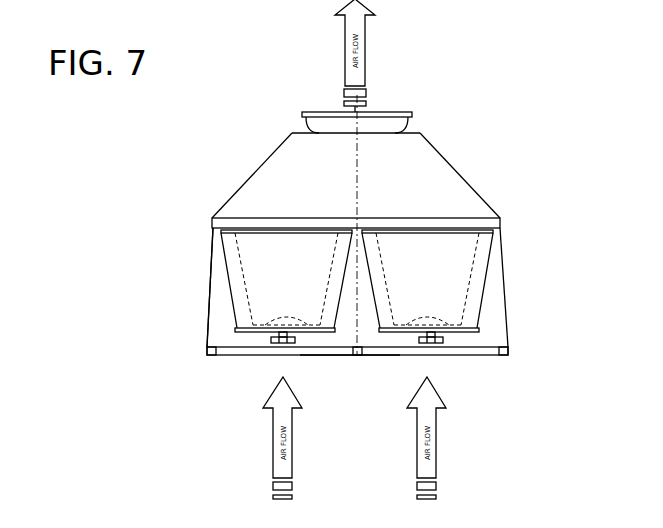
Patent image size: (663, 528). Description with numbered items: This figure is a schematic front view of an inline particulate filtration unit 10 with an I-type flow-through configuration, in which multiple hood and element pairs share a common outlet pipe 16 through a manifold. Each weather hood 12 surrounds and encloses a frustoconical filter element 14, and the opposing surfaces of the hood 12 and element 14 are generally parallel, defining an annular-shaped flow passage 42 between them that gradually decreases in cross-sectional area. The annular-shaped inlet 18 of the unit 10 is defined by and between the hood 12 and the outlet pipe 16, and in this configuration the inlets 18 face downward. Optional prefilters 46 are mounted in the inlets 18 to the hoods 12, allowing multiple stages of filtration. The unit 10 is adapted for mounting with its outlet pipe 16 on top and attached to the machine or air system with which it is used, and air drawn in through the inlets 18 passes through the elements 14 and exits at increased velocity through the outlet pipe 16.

The filtration unit 10 is at (480, 110).
The hood 12 is at (210, 282).
The filter element 14 is at (233, 260).
The outlet pipe 16 is at (328, 125).
The inlet 18 is at (460, 355).
The flow passage 42 is at (218, 317).
The prefilter 46 is at (388, 355).